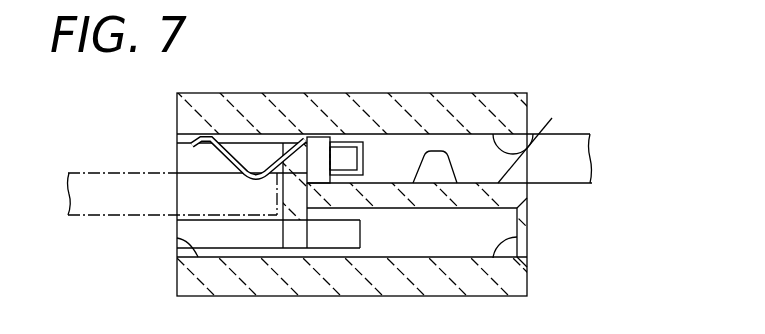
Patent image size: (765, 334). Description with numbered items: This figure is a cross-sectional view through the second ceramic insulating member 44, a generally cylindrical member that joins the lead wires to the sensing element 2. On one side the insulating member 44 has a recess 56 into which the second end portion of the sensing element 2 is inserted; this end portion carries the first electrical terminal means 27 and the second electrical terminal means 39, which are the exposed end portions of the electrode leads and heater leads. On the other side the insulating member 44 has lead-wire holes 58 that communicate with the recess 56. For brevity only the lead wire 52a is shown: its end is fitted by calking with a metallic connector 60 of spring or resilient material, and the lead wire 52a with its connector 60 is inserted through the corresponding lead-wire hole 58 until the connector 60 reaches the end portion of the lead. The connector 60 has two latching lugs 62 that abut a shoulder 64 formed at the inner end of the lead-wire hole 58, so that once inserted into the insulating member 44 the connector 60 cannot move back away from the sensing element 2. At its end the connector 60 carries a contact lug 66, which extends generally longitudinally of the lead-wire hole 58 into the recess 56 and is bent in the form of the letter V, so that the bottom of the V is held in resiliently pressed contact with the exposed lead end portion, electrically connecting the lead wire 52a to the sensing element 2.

The sensing element 2 is at (121, 161).
The first electrical terminal means 27 is at (199, 161).
The second electrical terminal means 39 is at (243, 232).
The second ceramic insulating member 44 is at (503, 63).
The lead wire 52a is at (585, 166).
The recess 56 is at (177, 238).
The lead-wire hole 58 is at (517, 237).
The metallic connector 60 is at (389, 122).
The latching lug 62 is at (341, 153).
The shoulder 64 is at (361, 238).
The contact lug 66 is at (223, 150).